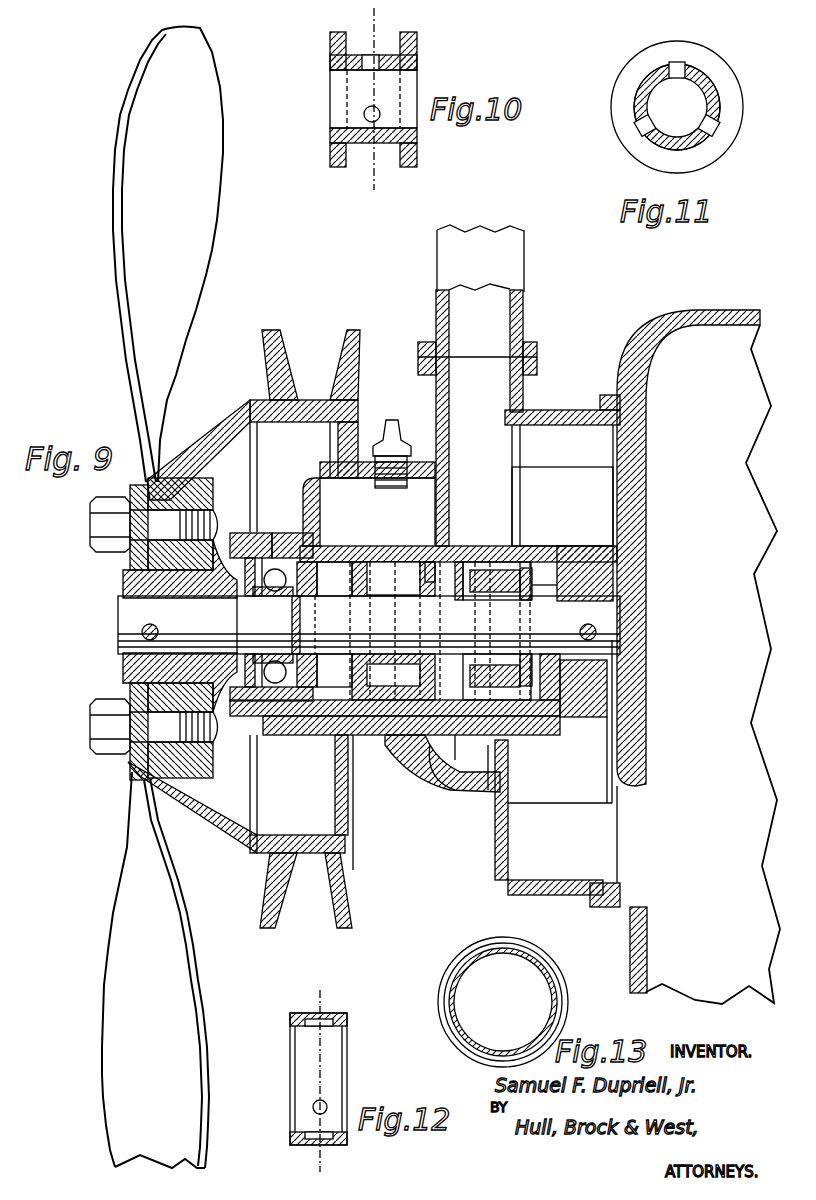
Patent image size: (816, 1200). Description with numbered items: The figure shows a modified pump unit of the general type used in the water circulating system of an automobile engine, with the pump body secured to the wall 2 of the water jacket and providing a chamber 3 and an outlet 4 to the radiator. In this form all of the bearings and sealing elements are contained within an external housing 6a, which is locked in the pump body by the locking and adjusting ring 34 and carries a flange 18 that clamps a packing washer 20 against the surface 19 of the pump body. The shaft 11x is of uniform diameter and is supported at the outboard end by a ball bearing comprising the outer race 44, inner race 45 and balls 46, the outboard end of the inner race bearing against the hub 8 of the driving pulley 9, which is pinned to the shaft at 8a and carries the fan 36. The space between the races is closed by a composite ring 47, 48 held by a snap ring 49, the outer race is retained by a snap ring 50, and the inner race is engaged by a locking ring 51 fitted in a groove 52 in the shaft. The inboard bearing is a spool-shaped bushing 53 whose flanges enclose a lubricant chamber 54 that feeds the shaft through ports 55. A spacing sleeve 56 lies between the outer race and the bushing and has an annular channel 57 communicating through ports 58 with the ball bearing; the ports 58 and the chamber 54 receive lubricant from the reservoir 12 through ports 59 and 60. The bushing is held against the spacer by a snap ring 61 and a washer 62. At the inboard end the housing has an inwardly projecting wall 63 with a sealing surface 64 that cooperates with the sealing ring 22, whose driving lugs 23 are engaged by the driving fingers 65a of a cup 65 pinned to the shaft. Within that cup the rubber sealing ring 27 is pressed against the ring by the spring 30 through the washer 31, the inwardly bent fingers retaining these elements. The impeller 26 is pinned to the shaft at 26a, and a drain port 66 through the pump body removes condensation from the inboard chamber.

In FIG. 9, the wall 2 is at (703, 308).
In FIG. 9, the chamber 3 is at (571, 816).
In FIG. 9, the outlet 4 is at (477, 385).
In FIG. 9, the external housing 6a is at (290, 738).
In FIG. 9, the hub 8 is at (122, 585).
In FIG. 9, the pin 8a is at (142, 632).
In FIG. 9, the driving pulley 9 is at (318, 398).
In FIG. 9, the shaft 11x is at (122, 645).
In FIG. 9, the lubricant reservoir 12 is at (330, 492).
In FIG. 9, the flange 18 is at (467, 747).
In FIG. 9, the annular surface 19 is at (474, 767).
In FIG. 9, the packing washer 20 is at (442, 767).
In FIG. 9, the sealing ring 22 is at (655, 678).
In FIG. 9, the driving lugs 23 is at (540, 718).
In FIG. 9, the impeller 26 is at (587, 478).
In FIG. 9, the pin 26a is at (596, 630).
In FIG. 9, the sealing ring 27 is at (495, 631).
In FIG. 9, the spring 30 is at (505, 600).
In FIG. 9, the washer 31 is at (527, 566).
In FIG. 9, the locking and adjusting ring 34 is at (240, 530).
In FIG. 9, the fan 36 is at (182, 292).
In FIG. 9, the outer race 44 is at (286, 530).
In FIG. 9, the inner race 45 is at (300, 600).
In FIG. 9, the balls 46 is at (312, 624).
In FIG. 9, the composite ring 47 is at (270, 592).
In FIG. 9, the composite ring 48 is at (255, 572).
In FIG. 9, the snap ring 49 is at (232, 590).
In FIG. 9, the snap ring 50 is at (266, 530).
In FIG. 9, the locking ring 51 is at (311, 625).
In FIG. 9, the groove 52 is at (326, 625).
In FIG. 9, the spool-shaped bushing 53 is at (395, 737).
In FIG. 10, the spool-shaped bushing 53 is at (362, 150).
In FIG. 11, the spool-shaped bushing 53 is at (722, 95).
In FIG. 9, the chamber 54 is at (393, 578).
In FIG. 9, the ports 55 is at (395, 631).
In FIG. 10, the ports 55 is at (370, 70).
In FIG. 11, the ports 55 is at (680, 75).
In FIG. 9, the spacing sleeve 56 is at (334, 624).
In FIG. 12, the spacing sleeve 56 is at (348, 1053).
In FIG. 13, the spacing sleeve 56 is at (560, 972).
In FIG. 9, the channel 57 is at (308, 716).
In FIG. 12, the channel 57 is at (305, 1146).
In FIG. 13, the channel 57 is at (448, 952).
In FIG. 9, the ports 58 is at (326, 546).
In FIG. 12, the ports 58 is at (316, 1026).
In FIG. 13, the ports 58 is at (503, 948).
In FIG. 9, the port 59 is at (345, 546).
In FIG. 9, the port 60 is at (397, 560).
In FIG. 9, the snap ring 61 is at (450, 546).
In FIG. 9, the washer 62 is at (430, 560).
In FIG. 9, the radially inwardly projecting wall 63 is at (565, 546).
In FIG. 9, the sealing surface 64 is at (560, 585).
In FIG. 9, the cup 65 is at (470, 560).
In FIG. 9, the driving fingers 65a is at (548, 700).
In FIG. 9, the drain port 66 is at (410, 765).